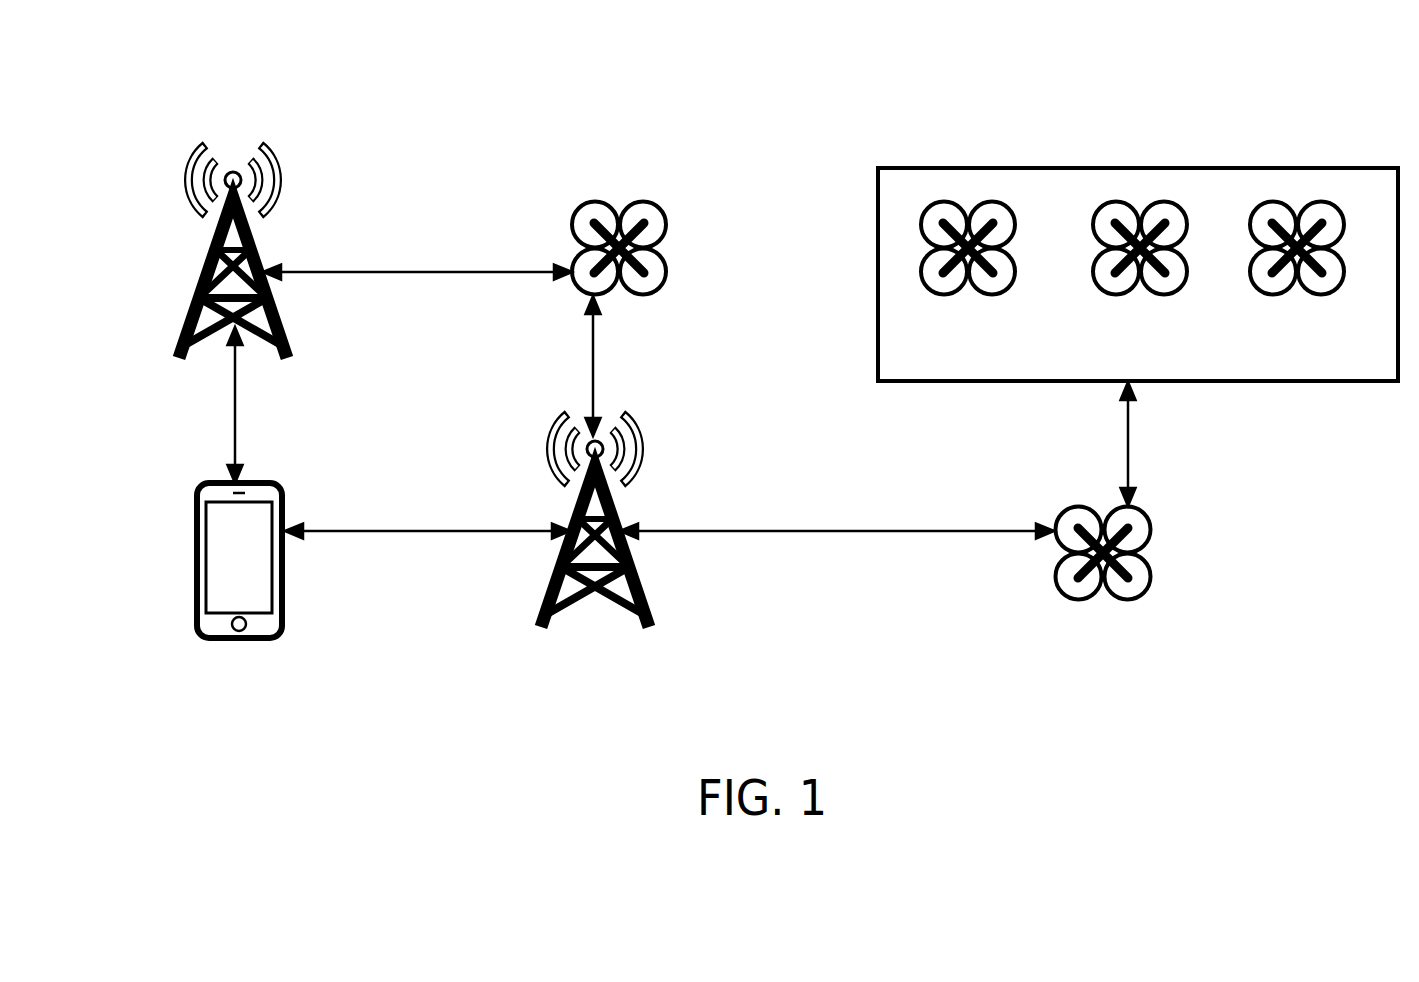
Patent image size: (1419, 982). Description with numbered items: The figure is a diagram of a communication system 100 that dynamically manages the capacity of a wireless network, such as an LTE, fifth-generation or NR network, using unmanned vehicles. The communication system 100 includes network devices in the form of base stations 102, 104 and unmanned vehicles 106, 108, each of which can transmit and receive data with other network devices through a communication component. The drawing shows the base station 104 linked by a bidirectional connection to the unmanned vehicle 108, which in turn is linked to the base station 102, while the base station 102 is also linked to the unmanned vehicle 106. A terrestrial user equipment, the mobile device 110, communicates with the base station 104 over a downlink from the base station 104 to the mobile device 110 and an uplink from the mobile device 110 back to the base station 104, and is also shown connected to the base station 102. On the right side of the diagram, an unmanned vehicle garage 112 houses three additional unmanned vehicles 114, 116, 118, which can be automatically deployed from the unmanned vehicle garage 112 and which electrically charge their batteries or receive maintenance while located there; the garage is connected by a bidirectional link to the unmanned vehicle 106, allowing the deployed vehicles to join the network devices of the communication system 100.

The communication system 100 is at (718, 77).
The base station 102 is at (548, 595).
The base station 104 is at (177, 327).
The unmanned vehicle 106 is at (1152, 577).
The unmanned vehicle 108 is at (583, 204).
The mobile device 110 is at (197, 563).
The unmanned vehicle garage 112 is at (1118, 168).
The unmanned vehicle 114 is at (977, 297).
The unmanned vehicle 116 is at (1146, 297).
The unmanned vehicle 118 is at (1302, 297).